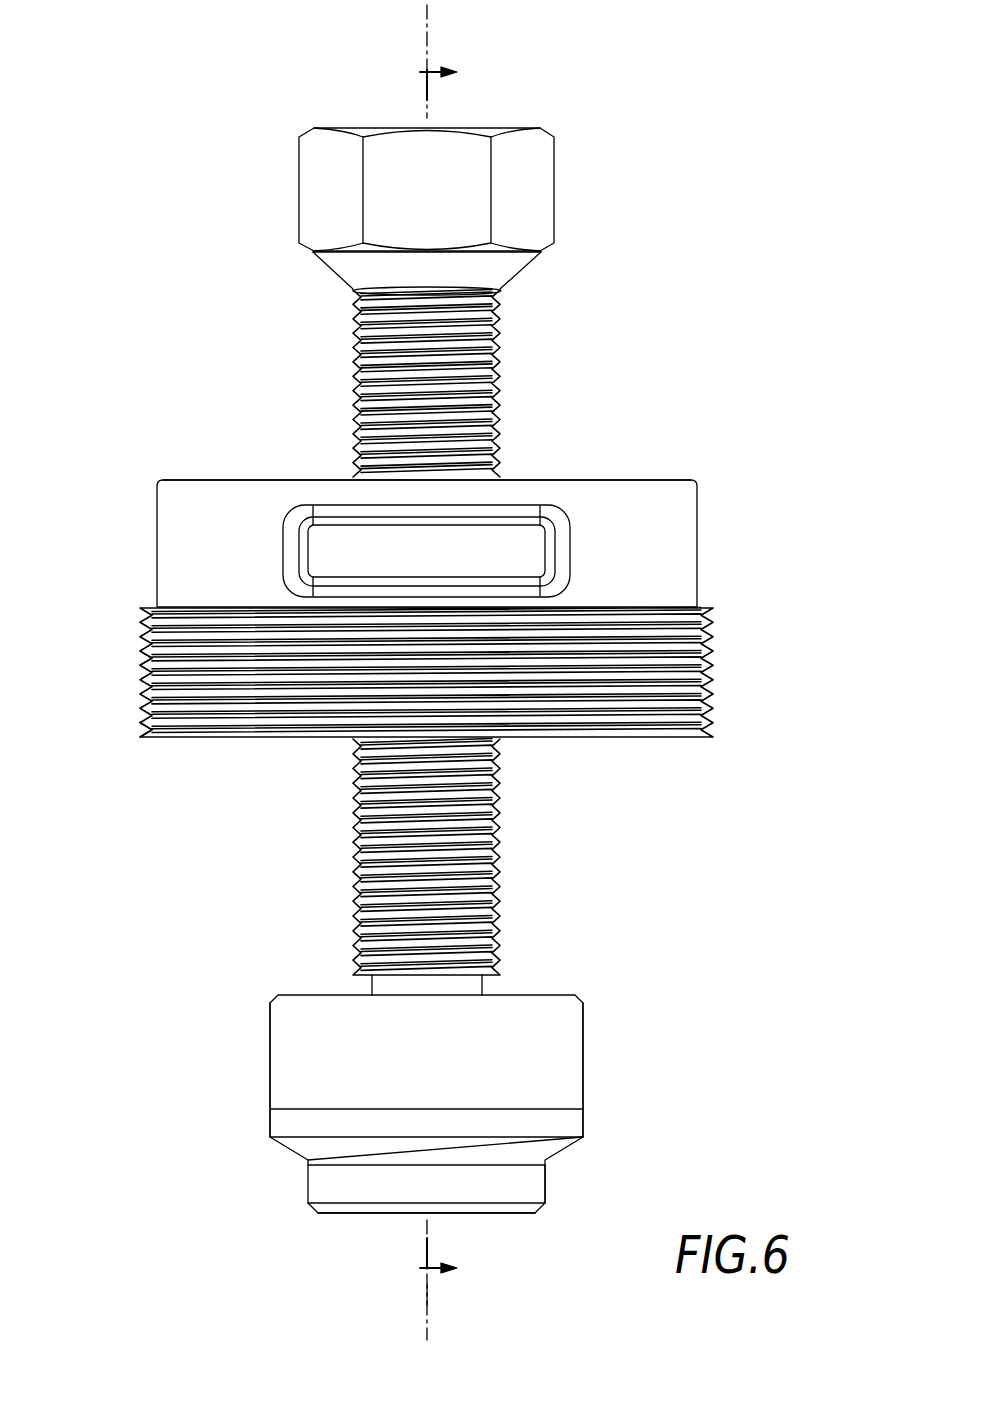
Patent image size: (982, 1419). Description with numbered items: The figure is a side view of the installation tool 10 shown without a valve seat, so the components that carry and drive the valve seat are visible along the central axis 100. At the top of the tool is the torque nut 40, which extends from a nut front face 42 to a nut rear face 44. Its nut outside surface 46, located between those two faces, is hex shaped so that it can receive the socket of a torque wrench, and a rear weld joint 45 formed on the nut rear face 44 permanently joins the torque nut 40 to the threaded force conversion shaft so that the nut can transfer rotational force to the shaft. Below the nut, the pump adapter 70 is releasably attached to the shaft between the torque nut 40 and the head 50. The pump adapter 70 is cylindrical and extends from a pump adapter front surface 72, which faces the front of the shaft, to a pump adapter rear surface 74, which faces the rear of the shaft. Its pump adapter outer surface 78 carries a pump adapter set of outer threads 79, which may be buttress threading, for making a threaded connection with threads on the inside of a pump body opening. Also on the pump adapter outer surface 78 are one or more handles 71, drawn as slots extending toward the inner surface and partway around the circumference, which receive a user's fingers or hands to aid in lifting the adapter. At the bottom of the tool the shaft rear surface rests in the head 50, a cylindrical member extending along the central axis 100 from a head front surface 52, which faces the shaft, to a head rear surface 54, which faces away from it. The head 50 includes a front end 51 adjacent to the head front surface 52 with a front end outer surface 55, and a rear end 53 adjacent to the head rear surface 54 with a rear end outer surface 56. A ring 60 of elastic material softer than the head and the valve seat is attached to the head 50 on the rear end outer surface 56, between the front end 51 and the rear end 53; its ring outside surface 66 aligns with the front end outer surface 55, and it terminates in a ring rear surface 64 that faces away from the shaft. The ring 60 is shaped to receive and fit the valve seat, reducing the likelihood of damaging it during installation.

The installation tool 10 is at (225, 86).
The torque nut 40 is at (566, 170).
The nut front face 42 is at (362, 128).
The nut rear face 44 is at (358, 250).
The rear weld joint 45 is at (502, 268).
The nut outside surface 46 is at (320, 186).
The head 50 is at (580, 1057).
The front end 51 is at (270, 1038).
The head front surface 52 is at (529, 995).
The rear end 53 is at (305, 1187).
The head rear surface 54 is at (532, 1214).
The front end outer surface 55 is at (565, 1017).
The rear end outer surface 56 is at (522, 1187).
The ring 60 is at (300, 1120).
The ring rear surface 64 is at (293, 1149).
The ring outside surface 66 is at (565, 1125).
The pump adapter 70 is at (160, 530).
The handles 71 is at (520, 548).
The pump adapter front surface 72 is at (603, 479).
The pump adapter rear surface 74 is at (620, 738).
The pump adapter outer surface 78 is at (147, 652).
The pump adapter set of outer threads 79 is at (147, 737).
The central axis 100 is at (430, 1300).